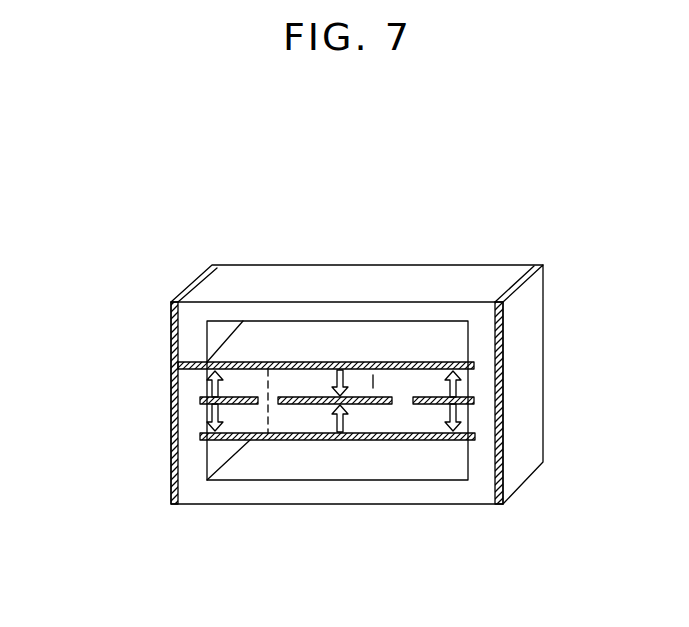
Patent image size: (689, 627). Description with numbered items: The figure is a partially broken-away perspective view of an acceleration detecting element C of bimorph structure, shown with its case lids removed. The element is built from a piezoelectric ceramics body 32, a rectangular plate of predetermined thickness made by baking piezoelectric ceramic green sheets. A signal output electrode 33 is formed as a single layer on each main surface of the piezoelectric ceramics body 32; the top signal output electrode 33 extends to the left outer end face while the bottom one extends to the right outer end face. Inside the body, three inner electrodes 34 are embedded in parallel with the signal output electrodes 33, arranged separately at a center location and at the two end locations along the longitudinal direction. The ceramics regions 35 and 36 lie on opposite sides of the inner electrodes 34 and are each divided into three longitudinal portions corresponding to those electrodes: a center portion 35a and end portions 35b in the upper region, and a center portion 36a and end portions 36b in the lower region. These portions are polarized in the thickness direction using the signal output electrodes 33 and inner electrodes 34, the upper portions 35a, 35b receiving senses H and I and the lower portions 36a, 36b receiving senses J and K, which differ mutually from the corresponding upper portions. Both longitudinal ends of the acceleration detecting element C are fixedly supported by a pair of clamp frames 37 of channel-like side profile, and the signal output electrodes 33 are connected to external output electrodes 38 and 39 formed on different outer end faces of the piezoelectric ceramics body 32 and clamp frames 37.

The piezoelectric ceramics body 32 is at (588, 127).
The signal output electrode 33 is at (300, 333).
The inner electrode 34 is at (305, 403).
The ceramics region 35 is at (408, 391).
The center portion 35a is at (385, 362).
The end portion 35b is at (195, 388).
The ceramics region 36 is at (417, 428).
The center portion 36a is at (402, 365).
The end portion 36b is at (196, 436).
The clamp frame 37 is at (250, 280).
The external output electrode 38 is at (170, 325).
The external output electrode 39 is at (520, 473).
The acceleration detecting element C is at (212, 256).
The sense of polarization H is at (360, 362).
The sense of polarization I is at (172, 365).
The sense of polarization J is at (353, 441).
The sense of polarization K is at (205, 413).